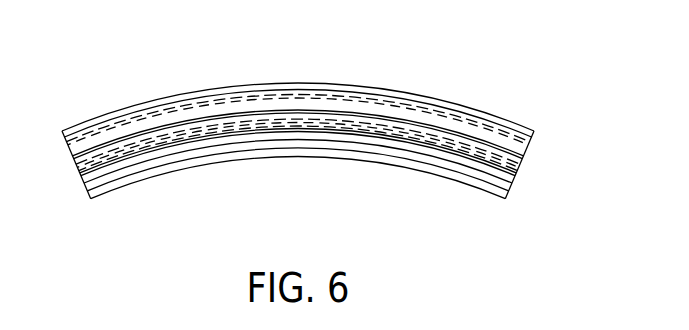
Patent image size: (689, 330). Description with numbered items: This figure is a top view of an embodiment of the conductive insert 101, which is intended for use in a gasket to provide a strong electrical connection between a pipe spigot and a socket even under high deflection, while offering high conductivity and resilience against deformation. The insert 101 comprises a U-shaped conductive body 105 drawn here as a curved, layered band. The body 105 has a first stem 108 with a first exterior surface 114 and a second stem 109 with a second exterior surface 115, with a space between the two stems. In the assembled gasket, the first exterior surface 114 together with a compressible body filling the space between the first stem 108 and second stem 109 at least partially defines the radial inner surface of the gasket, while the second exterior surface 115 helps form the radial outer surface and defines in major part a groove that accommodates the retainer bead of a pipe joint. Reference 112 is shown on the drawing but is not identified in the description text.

The conductive insert 101 is at (112, 83).
The U-shaped conductive body 105 is at (515, 152).
The first stem 108 is at (510, 193).
The second stem 109 is at (527, 132).
The intermediate layer 112 is at (260, 107).
The first exterior surface 114 is at (448, 167).
The second exterior surface 115 is at (430, 103).